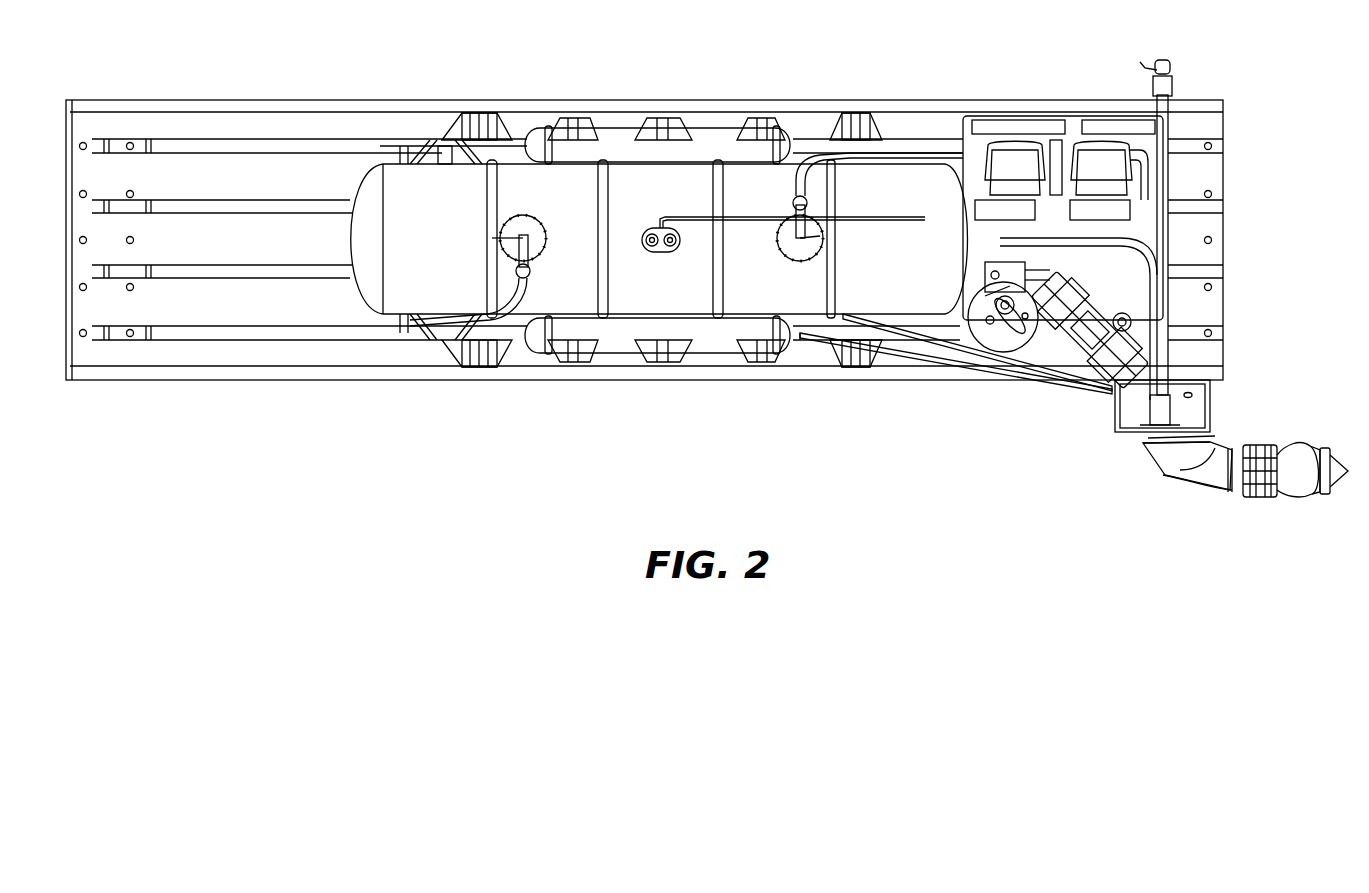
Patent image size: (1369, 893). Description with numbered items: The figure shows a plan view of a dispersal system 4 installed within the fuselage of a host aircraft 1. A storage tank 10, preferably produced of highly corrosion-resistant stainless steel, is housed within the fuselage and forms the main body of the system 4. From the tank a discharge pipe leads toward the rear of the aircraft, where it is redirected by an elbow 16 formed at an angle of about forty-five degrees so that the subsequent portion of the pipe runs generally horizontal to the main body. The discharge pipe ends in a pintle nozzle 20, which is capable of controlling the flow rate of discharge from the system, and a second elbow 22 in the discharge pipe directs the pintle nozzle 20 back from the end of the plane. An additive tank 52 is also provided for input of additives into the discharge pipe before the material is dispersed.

The host aircraft 1 is at (265, 112).
The system 4 is at (758, 103).
The storage tank 10 is at (425, 212).
The elbow 16 is at (1222, 450).
The pintle nozzle 20 is at (1300, 480).
The second elbow 22 is at (1208, 476).
The additive tank 52 is at (993, 336).